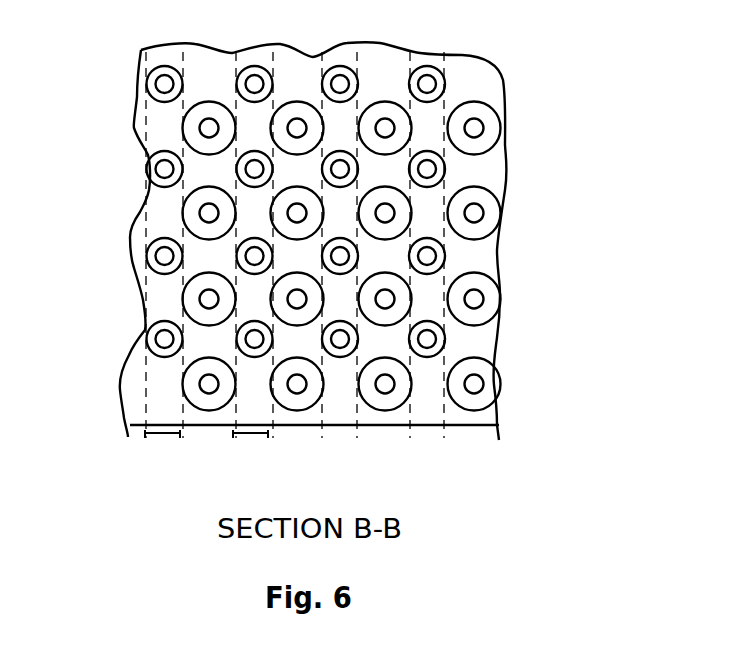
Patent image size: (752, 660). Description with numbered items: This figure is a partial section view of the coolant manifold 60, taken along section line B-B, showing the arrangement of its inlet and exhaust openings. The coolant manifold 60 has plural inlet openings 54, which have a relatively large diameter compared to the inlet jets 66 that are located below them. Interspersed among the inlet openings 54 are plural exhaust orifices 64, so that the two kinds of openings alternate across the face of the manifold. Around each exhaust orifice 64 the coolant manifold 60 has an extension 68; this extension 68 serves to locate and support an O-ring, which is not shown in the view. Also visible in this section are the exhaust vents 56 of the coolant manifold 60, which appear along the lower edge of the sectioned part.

The inlet opening 54 is at (497, 368).
The exhaust vent 56 is at (252, 437).
The coolant manifold 60 is at (380, 427).
The exhaust orifice 64 is at (235, 260).
The inlet jet 66 is at (397, 217).
The extension 68 is at (244, 50).